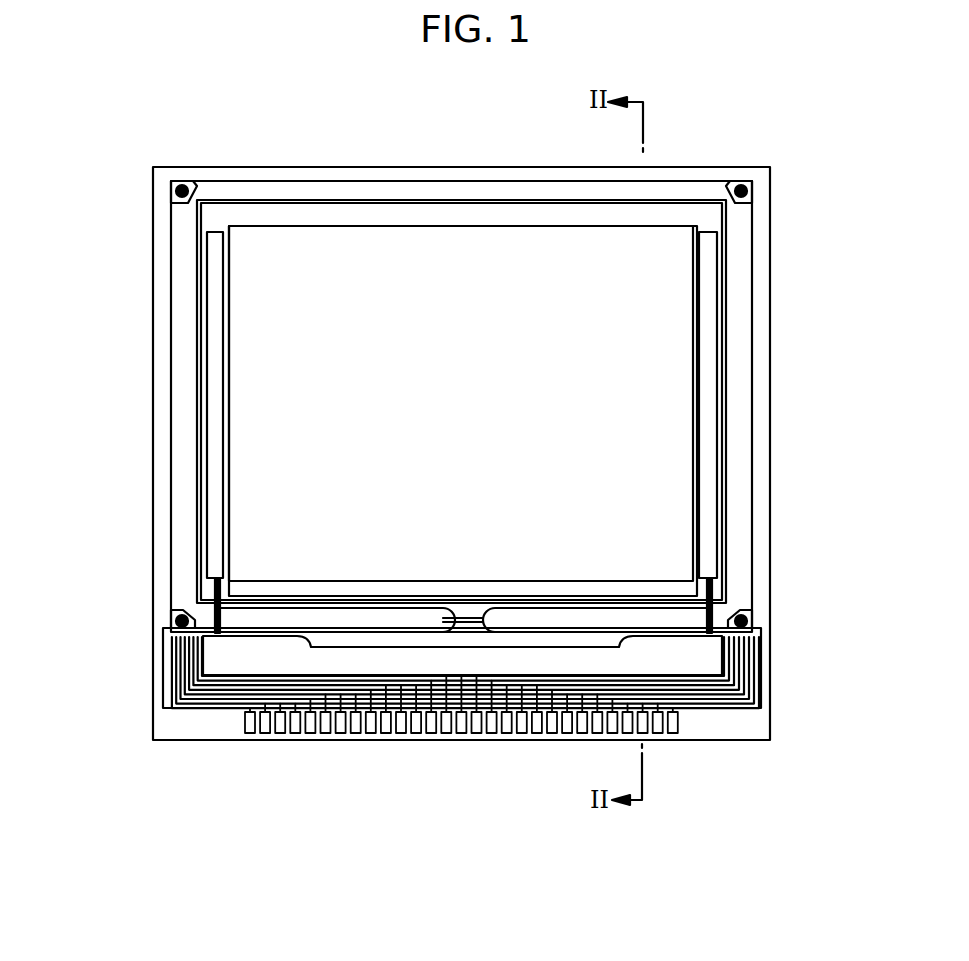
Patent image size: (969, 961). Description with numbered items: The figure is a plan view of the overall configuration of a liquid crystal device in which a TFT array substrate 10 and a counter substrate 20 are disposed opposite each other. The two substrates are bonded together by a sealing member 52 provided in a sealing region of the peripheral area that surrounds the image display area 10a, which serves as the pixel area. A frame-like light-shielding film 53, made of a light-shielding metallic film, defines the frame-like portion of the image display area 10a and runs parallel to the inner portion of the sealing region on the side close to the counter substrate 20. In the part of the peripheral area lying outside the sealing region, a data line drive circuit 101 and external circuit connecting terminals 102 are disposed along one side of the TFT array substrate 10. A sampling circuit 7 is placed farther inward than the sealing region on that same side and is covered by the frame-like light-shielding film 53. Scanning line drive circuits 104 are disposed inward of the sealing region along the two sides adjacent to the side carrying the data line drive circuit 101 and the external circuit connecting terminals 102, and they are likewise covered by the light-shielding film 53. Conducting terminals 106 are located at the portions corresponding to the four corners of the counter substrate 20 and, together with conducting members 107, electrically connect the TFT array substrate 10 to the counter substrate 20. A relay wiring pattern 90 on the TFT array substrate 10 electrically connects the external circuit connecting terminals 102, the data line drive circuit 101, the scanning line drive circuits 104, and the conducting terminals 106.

The TFT array substrate 10 is at (285, 173).
The image display area 10a is at (272, 355).
The counter substrate 20 is at (484, 181).
The sealing member 52 is at (742, 330).
The scanning line drive circuits 104 is at (712, 405).
The sampling circuit 7 is at (303, 590).
The frame-like light-shielding film 53 is at (716, 582).
The conducting terminals 106 is at (193, 186).
The conducting members 107 is at (172, 628).
The relay wiring pattern 90 is at (165, 693).
The data line drive circuit 101 is at (227, 660).
The external circuit connecting terminals 102 is at (427, 714).